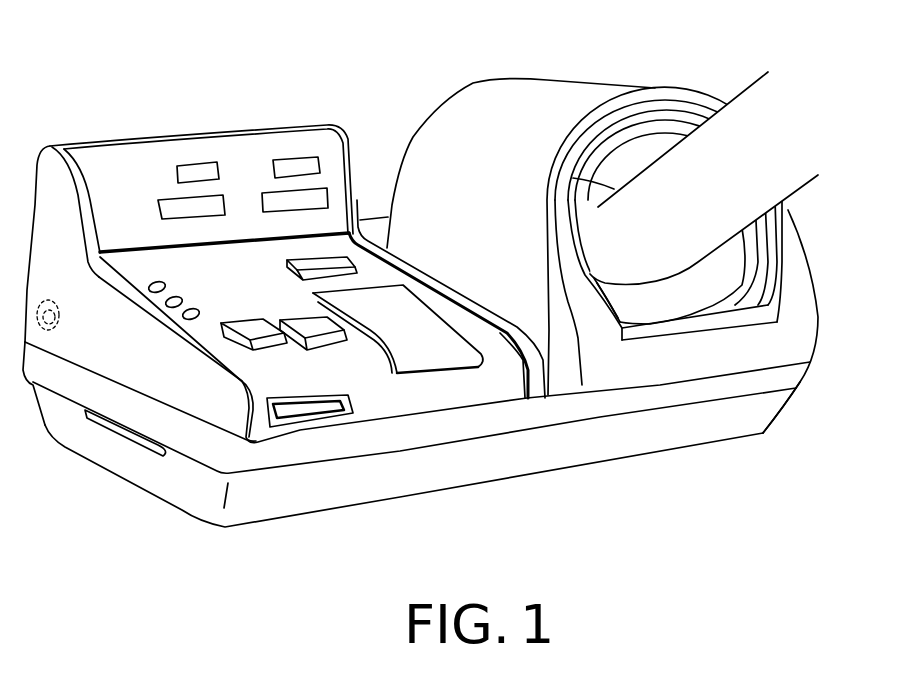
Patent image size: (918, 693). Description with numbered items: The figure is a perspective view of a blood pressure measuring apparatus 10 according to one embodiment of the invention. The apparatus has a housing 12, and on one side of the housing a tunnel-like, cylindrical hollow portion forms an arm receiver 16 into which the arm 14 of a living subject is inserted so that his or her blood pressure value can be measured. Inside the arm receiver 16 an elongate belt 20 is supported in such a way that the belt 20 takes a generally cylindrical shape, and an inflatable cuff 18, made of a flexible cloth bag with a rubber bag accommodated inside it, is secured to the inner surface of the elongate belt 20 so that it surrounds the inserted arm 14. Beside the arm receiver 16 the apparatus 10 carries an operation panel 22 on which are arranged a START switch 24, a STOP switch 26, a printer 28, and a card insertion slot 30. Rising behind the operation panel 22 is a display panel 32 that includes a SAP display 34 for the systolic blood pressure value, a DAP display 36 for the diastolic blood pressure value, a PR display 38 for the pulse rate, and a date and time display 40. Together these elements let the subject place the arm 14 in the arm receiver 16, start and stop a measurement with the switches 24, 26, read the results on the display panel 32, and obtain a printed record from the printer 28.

The BP measuring apparatus 10 is at (160, 608).
The housing 12 is at (797, 338).
The arm 14 is at (782, 173).
The arm receiver 16 is at (625, 335).
The inflatable cuff 18 is at (650, 127).
The elongate belt 20 is at (787, 395).
The operation panel 22 is at (123, 272).
The START switch 24 is at (235, 330).
The STOP switch 26 is at (313, 333).
The printer 28 is at (440, 350).
The card insertion slot 30 is at (297, 420).
The display panel 32 is at (120, 177).
The SAP display 34 is at (170, 212).
The DAP display 36 is at (287, 203).
The PR display 38 is at (292, 165).
The date and time display 40 is at (193, 167).